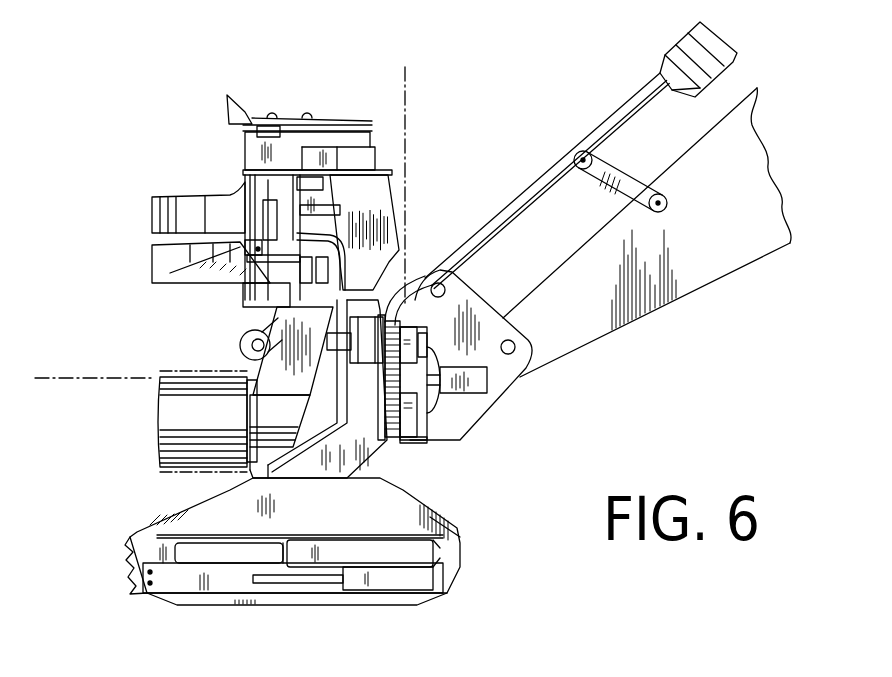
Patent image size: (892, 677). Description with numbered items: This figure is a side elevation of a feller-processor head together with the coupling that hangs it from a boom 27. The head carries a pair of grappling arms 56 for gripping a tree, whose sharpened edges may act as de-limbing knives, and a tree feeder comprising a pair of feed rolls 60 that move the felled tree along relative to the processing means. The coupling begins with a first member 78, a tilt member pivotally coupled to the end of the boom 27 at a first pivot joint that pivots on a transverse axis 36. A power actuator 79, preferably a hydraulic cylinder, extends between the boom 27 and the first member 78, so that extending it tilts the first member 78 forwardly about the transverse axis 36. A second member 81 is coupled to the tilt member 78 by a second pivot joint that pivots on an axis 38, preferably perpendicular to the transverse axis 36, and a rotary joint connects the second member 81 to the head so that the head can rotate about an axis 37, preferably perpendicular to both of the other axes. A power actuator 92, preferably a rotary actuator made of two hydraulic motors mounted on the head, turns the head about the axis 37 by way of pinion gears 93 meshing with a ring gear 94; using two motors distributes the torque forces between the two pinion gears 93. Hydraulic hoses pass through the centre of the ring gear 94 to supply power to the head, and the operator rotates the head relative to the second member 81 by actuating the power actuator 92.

The boom 27 is at (684, 268).
The transverse axis 36 is at (522, 328).
The axis 37 is at (62, 380).
The axis 38 is at (407, 107).
The grappling arms 56 is at (181, 200).
The feed rolls 60 is at (193, 398).
The first member 78 is at (472, 292).
The power actuator 79 is at (685, 46).
The second member 81 is at (413, 418).
The power actuator 92 is at (378, 300).
The pinion gears 93 is at (400, 305).
The ring gear 94 is at (390, 440).